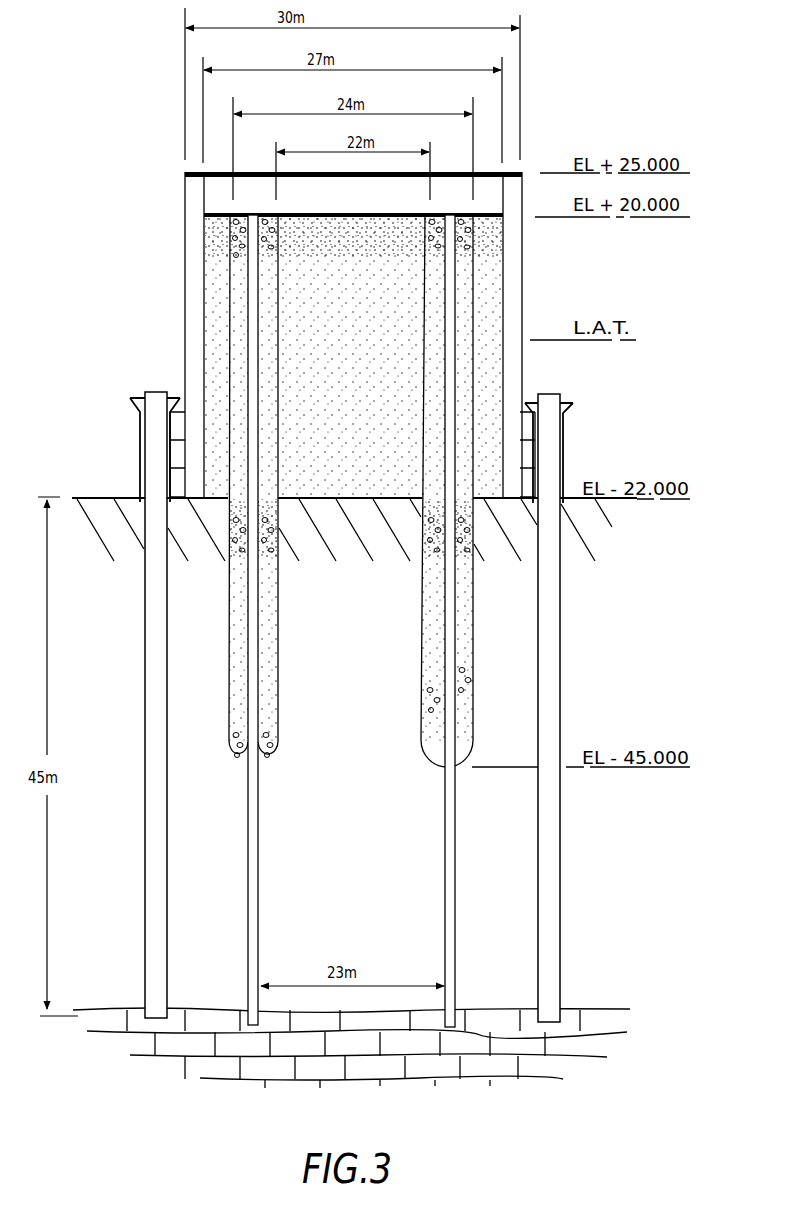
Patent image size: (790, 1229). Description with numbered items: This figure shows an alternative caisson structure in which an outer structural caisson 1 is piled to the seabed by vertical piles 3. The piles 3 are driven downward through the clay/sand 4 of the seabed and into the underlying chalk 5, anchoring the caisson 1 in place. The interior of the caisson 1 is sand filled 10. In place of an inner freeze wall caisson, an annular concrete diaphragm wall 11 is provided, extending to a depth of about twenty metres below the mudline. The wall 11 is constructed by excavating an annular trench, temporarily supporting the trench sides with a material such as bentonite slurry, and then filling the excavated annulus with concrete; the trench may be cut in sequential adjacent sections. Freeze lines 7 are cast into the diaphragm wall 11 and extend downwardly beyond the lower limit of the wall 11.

The outer structural caisson 1 is at (185, 295).
The vertical piles 3 is at (145, 707).
The clay/sand 4 is at (354, 540).
The chalk 5 is at (594, 1025).
The freeze lines 7 is at (262, 905).
The sand fill 10 is at (353, 357).
The annular concrete diaphragm wall 11 is at (278, 740).